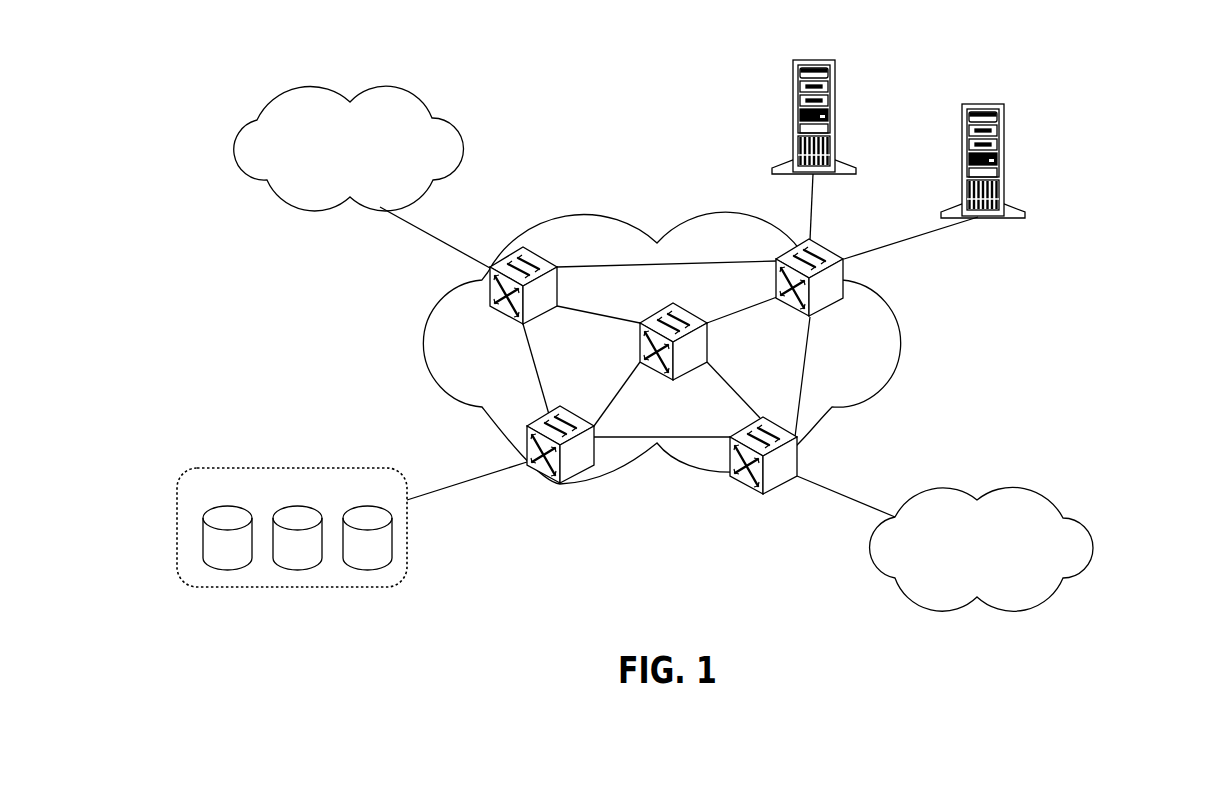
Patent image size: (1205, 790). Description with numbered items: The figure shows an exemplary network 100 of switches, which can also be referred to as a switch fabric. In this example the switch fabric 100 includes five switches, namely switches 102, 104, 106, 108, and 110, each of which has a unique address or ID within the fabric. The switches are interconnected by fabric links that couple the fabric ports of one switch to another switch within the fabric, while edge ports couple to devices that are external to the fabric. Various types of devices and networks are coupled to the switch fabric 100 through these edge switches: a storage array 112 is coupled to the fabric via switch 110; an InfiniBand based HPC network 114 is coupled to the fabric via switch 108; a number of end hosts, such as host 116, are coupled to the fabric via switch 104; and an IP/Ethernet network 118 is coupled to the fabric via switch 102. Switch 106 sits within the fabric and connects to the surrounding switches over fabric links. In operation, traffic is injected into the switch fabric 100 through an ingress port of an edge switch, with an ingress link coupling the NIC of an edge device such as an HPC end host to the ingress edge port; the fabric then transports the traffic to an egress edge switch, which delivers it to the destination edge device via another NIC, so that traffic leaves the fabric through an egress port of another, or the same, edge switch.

The network 100 is at (905, 343).
The switch 102 is at (763, 494).
The switch 104 is at (843, 296).
The switch 106 is at (673, 305).
The switch 108 is at (490, 302).
The switch 110 is at (558, 408).
The storage array 112 is at (383, 587).
The InfiniBand based HPC network 114 is at (232, 148).
The host 116 is at (1028, 212).
The IP/Ethernet network 118 is at (1098, 548).